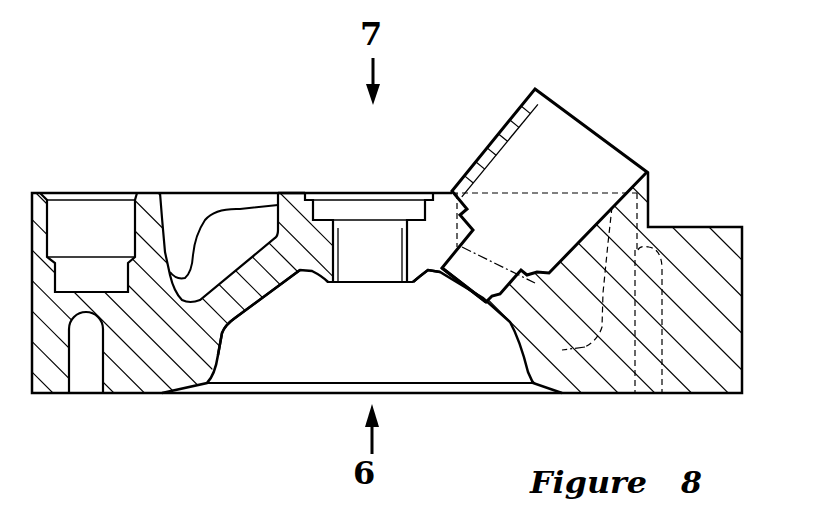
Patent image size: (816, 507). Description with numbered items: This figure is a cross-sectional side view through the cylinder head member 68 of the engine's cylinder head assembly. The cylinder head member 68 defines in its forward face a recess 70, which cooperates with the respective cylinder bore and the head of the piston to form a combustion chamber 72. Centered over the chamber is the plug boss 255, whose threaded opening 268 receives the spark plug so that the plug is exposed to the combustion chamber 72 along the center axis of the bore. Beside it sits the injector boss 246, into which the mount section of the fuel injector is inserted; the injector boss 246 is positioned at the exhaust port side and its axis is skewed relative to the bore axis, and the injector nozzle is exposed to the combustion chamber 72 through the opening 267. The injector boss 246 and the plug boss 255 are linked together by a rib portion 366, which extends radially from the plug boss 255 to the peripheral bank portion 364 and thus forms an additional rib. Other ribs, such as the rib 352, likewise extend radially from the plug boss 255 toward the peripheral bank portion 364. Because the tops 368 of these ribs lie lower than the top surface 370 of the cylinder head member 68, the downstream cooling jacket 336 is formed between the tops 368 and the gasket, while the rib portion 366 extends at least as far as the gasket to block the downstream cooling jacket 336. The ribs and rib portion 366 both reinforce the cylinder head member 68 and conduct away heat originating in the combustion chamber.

The cylinder head member 68 is at (699, 224).
The peripheral bank portion 364 is at (140, 219).
The cylinder head downstream cooling jacket 336 is at (179, 213).
The rib 352 is at (238, 222).
The tops of the ribs 368 is at (230, 221).
The top surface 370 is at (298, 194).
The threaded opening 268 is at (340, 253).
The combustion chamber 72 is at (386, 356).
The recess 70 is at (257, 310).
The plug boss 255 is at (413, 268).
The rib portion 366 is at (443, 217).
The opening 267 is at (487, 299).
The injector boss 246 is at (502, 133).